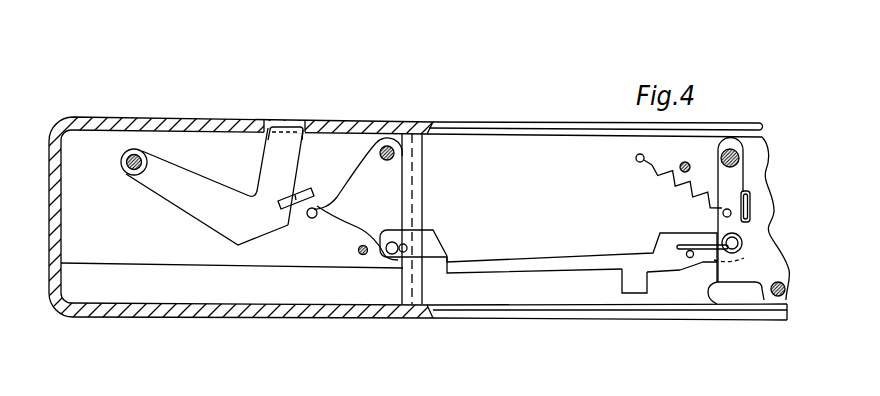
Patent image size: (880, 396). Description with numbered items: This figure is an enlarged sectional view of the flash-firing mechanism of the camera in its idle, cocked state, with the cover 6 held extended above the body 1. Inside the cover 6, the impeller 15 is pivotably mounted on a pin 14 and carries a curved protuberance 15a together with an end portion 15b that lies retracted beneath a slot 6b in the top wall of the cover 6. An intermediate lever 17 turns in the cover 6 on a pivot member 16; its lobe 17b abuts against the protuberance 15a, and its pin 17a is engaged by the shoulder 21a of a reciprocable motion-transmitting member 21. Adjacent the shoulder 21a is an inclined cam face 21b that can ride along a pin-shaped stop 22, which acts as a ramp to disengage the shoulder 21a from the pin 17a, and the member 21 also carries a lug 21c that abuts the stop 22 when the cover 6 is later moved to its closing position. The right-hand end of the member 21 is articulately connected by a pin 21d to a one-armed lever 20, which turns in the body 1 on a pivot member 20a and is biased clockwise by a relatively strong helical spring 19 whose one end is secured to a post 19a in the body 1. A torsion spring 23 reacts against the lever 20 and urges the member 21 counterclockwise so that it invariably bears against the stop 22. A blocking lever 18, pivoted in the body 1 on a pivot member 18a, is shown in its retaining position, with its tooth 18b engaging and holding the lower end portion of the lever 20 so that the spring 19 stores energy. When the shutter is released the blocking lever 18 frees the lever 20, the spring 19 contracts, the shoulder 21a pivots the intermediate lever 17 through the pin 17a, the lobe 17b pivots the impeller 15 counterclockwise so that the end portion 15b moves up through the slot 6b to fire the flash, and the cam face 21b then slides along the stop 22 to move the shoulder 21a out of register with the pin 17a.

The body 1 is at (734, 317).
The cover 6 is at (205, 117).
The slot 6b is at (269, 119).
The pin 14 is at (142, 173).
The impeller 15 is at (192, 167).
The protuberance 15a is at (308, 187).
The end portion 15b is at (283, 147).
The pivot member 16 is at (390, 138).
The intermediate lever 17 is at (393, 190).
The pin 17a is at (390, 257).
The lobe 17b is at (313, 215).
The blocking lever 18 is at (767, 273).
The pivot member 18a is at (785, 289).
The tooth 18b is at (713, 292).
The helical spring 19 is at (665, 186).
The post 19a is at (633, 160).
The one-armed lever 20 is at (733, 182).
The pivot member 20a is at (732, 147).
The motion-transmitting member 21 is at (517, 263).
The shoulder 21a is at (403, 255).
The cam face 21b is at (456, 258).
The lug 21c is at (622, 280).
The pin 21d is at (744, 238).
The stop 22 is at (360, 256).
The torsion spring 23 is at (707, 258).